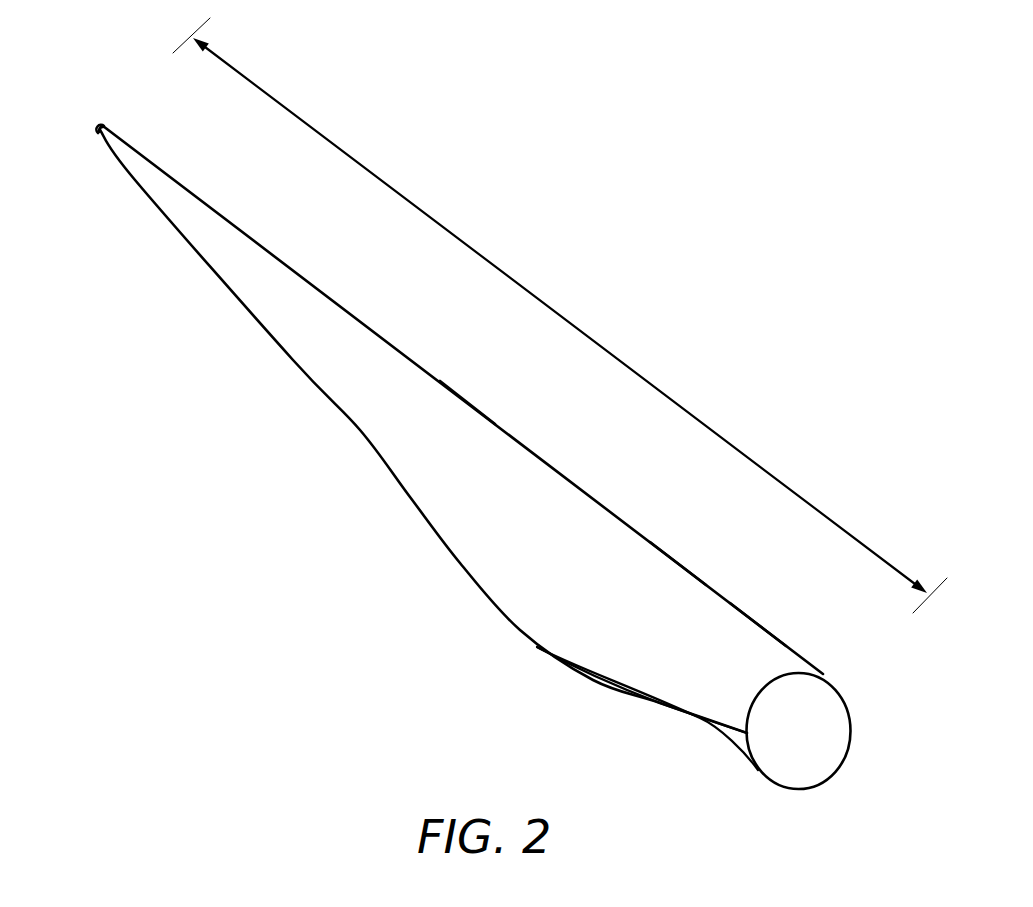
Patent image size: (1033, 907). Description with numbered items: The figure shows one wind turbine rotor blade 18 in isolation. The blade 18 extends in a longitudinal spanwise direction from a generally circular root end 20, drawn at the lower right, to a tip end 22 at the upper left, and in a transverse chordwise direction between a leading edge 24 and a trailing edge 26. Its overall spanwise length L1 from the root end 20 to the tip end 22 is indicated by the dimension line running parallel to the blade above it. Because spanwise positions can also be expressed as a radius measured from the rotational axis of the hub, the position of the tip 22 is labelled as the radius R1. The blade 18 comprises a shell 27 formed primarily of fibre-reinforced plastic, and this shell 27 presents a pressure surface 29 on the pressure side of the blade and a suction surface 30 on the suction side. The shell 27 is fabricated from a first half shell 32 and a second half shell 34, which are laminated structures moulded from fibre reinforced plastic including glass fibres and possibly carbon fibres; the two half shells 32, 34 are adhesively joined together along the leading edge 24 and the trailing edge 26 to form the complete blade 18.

The blade 18 is at (457, 438).
The root end 20 is at (832, 677).
The tip end 22 is at (100, 128).
The leading edge 24 is at (544, 461).
The trailing edge 26 is at (347, 415).
The shell 27 is at (673, 568).
The pressure surface 29 is at (735, 742).
The suction surface 30 is at (750, 627).
The first half shell 32 is at (458, 418).
The second half shell 34 is at (701, 722).
The tip radius R1 is at (100, 130).
The blade length L1 is at (560, 315).